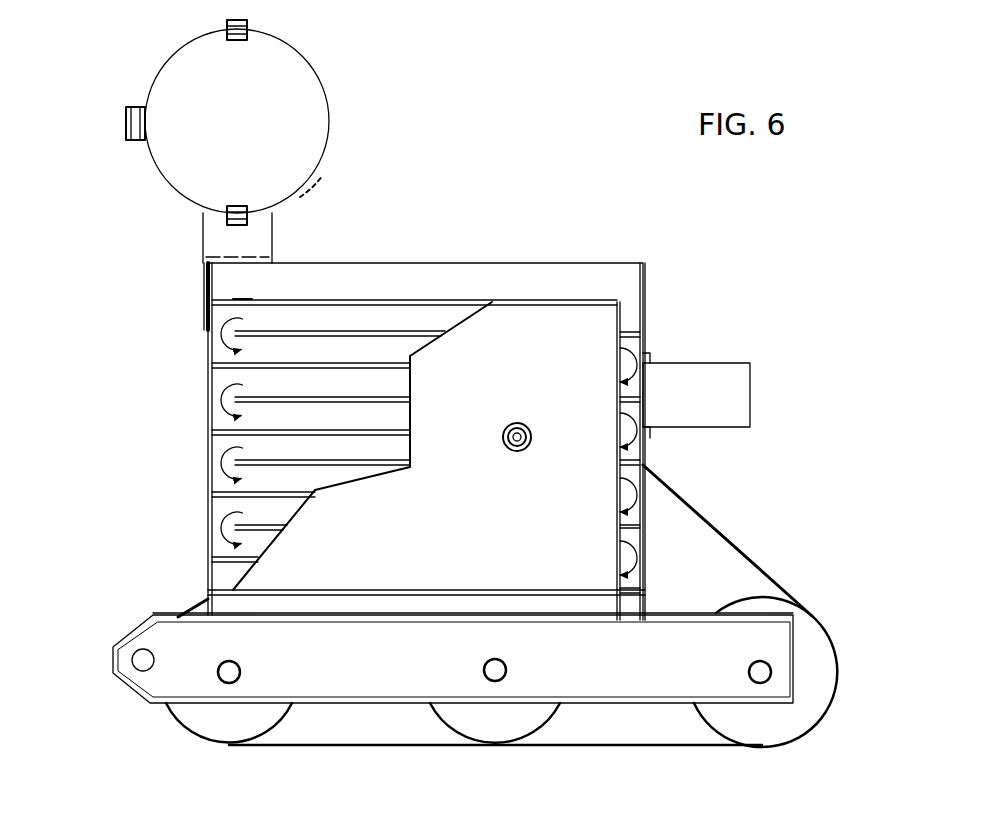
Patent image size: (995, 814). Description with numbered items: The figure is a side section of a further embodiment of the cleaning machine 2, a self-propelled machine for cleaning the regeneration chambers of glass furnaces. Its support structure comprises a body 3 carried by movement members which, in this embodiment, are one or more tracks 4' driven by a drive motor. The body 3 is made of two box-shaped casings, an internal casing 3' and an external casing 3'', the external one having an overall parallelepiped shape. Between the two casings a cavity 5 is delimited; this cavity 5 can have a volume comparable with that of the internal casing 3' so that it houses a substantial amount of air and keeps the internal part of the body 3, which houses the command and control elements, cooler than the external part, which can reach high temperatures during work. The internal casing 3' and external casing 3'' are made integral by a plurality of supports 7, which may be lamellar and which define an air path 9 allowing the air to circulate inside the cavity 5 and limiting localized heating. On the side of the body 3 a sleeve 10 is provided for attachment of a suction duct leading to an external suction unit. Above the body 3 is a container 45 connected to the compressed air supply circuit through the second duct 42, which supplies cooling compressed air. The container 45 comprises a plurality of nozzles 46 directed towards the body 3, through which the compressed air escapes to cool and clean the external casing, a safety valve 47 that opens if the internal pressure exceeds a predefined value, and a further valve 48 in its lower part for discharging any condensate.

The cleaning machine 2 is at (549, 216).
The body 3 is at (424, 388).
The internal casing 3' is at (414, 257).
The external casing 3'' is at (685, 426).
The tracks 4' is at (502, 605).
The cavity 5 is at (243, 284).
The supports 7 is at (205, 311).
The air path 9 is at (632, 352).
The sleeve 10 is at (728, 388).
The second duct 42 is at (135, 125).
The container 45 is at (317, 72).
The nozzles 46 is at (307, 185).
The safety valve 47 is at (225, 23).
The further valve 48 is at (228, 213).